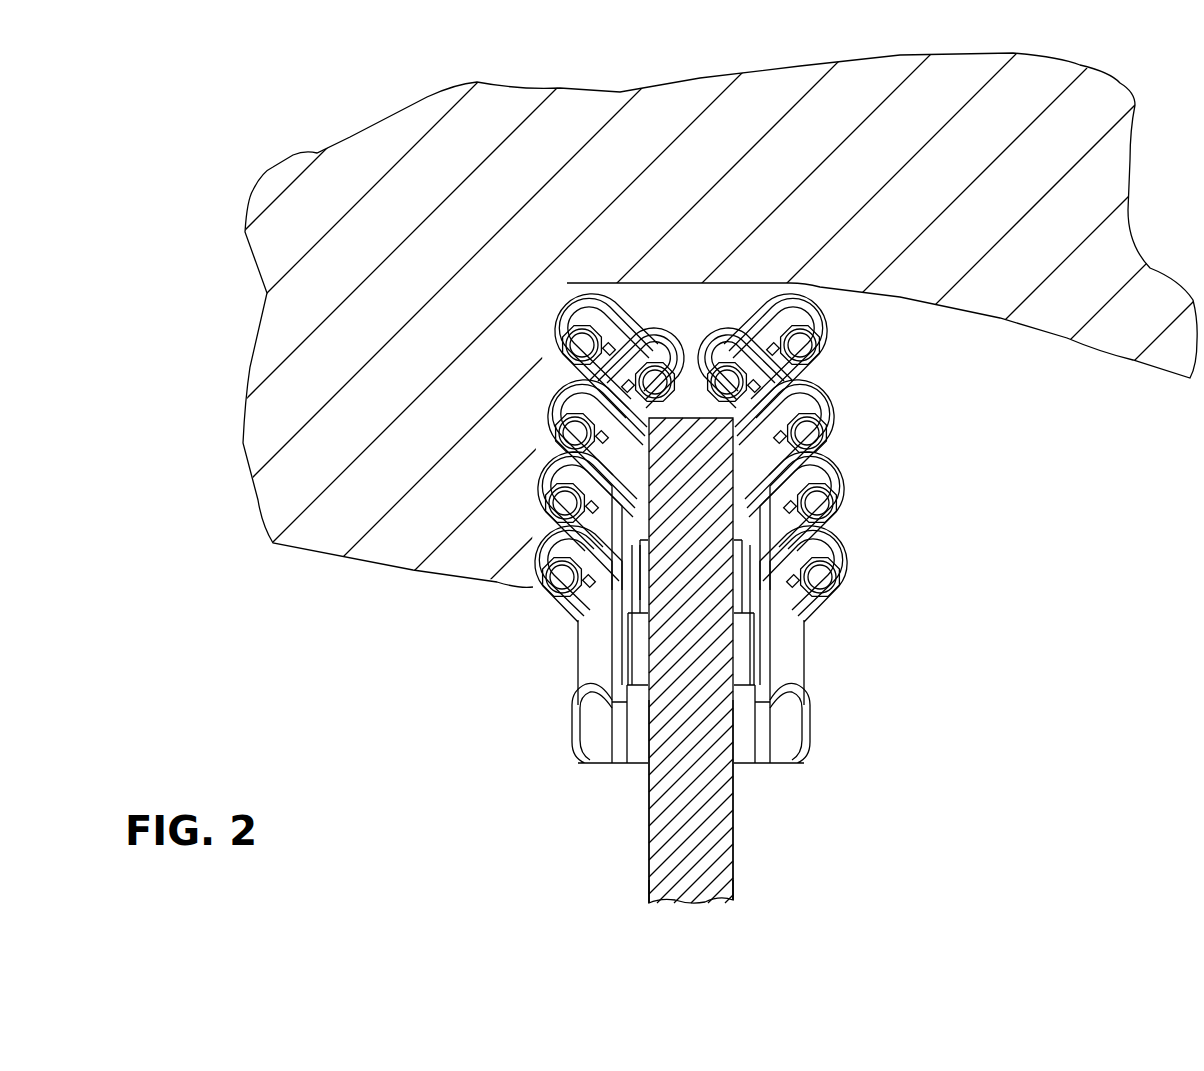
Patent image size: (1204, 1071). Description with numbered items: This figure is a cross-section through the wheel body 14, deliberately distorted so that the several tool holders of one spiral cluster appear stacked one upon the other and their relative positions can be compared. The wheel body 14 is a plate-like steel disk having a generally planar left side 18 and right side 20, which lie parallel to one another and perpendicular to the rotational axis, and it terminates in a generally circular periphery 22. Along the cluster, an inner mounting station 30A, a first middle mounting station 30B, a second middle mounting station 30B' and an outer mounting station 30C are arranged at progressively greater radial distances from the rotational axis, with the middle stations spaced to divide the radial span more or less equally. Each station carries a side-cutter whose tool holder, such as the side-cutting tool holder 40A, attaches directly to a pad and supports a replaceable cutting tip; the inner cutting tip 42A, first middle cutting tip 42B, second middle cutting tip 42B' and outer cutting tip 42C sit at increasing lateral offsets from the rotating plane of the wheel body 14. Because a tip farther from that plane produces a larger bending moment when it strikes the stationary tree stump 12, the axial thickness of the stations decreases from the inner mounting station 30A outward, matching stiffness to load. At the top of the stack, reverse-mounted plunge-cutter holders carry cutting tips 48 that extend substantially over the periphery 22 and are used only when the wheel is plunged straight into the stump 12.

The tree stump 12 is at (1108, 192).
The wheel body 14 is at (652, 860).
The left side 18 is at (649, 822).
The right side 20 is at (733, 838).
The periphery 22 is at (687, 418).
The inner mounting station 30A is at (748, 770).
The middle mounting station 30B is at (570, 667).
The middle mounting station 30B' is at (812, 612).
The outer mounting station 30C is at (632, 566).
The side-cutting tool holder 40A is at (602, 636).
The inner cutting tip 42A is at (523, 527).
The first middle cutting tip 42B is at (686, 461).
The second middle cutting tip 42B' is at (683, 453).
The outer cutting tip 42C is at (558, 305).
The cutting tip 48 is at (650, 325).